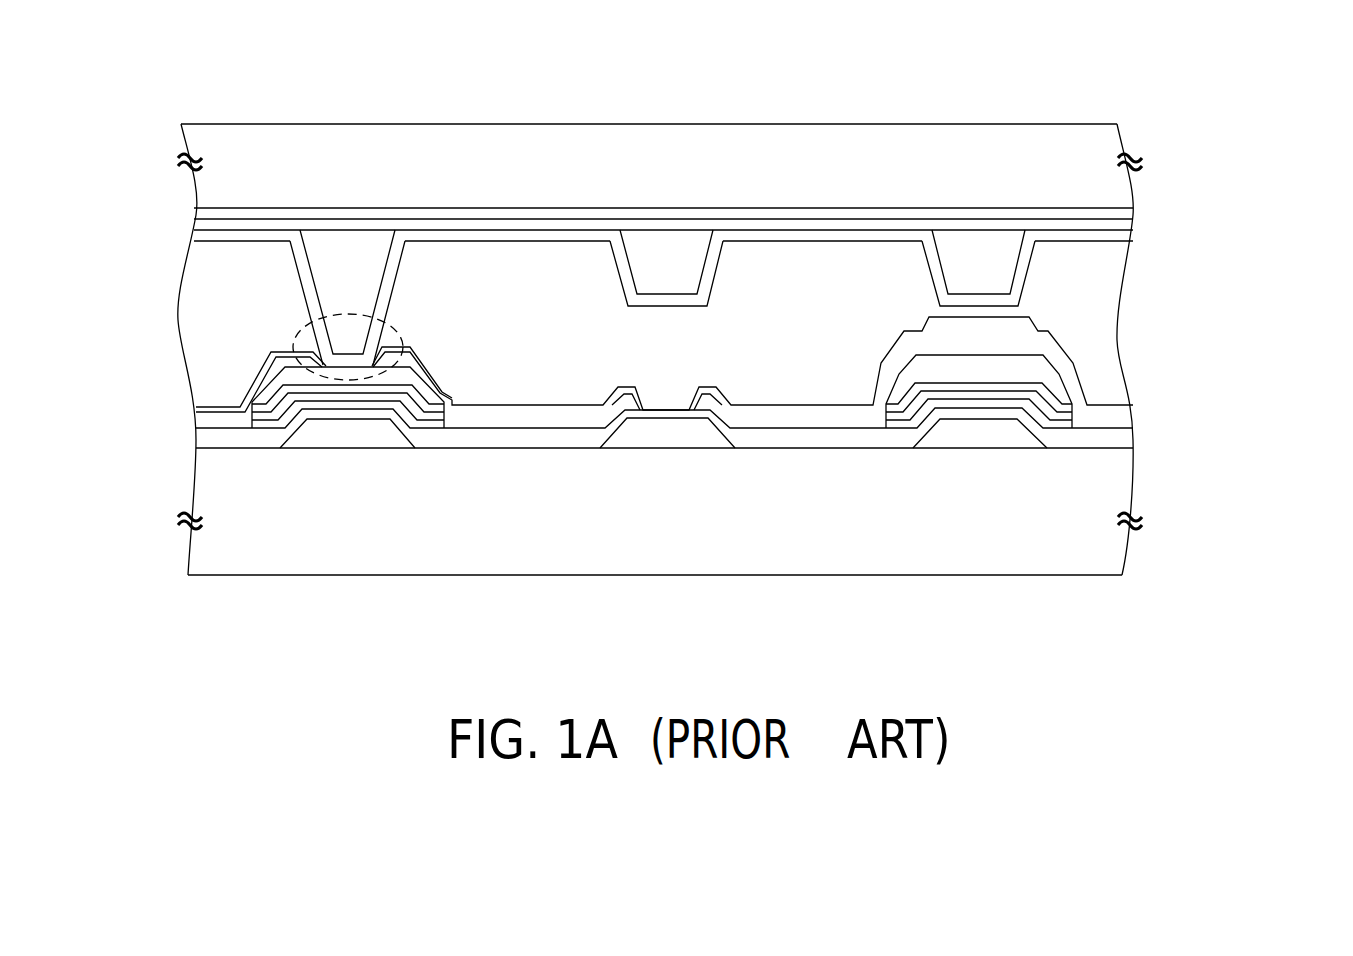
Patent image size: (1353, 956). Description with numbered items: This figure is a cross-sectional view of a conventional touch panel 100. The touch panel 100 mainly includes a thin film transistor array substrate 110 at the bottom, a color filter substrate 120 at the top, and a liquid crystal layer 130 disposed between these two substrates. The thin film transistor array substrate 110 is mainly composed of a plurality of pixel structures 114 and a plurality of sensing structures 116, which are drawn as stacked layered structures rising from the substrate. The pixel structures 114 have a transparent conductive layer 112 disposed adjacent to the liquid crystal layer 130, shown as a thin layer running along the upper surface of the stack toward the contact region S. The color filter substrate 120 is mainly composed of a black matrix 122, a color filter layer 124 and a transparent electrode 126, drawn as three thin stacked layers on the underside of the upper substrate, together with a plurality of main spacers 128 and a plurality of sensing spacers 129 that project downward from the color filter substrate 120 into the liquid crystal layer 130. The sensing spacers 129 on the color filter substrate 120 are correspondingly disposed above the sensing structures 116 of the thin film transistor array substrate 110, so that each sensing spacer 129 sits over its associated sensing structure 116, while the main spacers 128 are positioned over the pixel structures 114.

The touch panel 100 is at (1211, 637).
The thin film transistor array substrate 110 is at (1177, 447).
The transparent conductive layer 112 is at (215, 408).
The pixel structures 114 is at (1113, 465).
The sensing structures 116 is at (1020, 323).
The color filter substrate 120 is at (757, 183).
The black matrix 122 is at (1128, 212).
The color filter layer 124 is at (1128, 226).
The transparent electrode 126 is at (1120, 238).
The main spacers 128 is at (348, 246).
The sensing spacers 129 is at (990, 246).
The liquid crystal layer 130 is at (1097, 288).
The contact region S is at (302, 333).